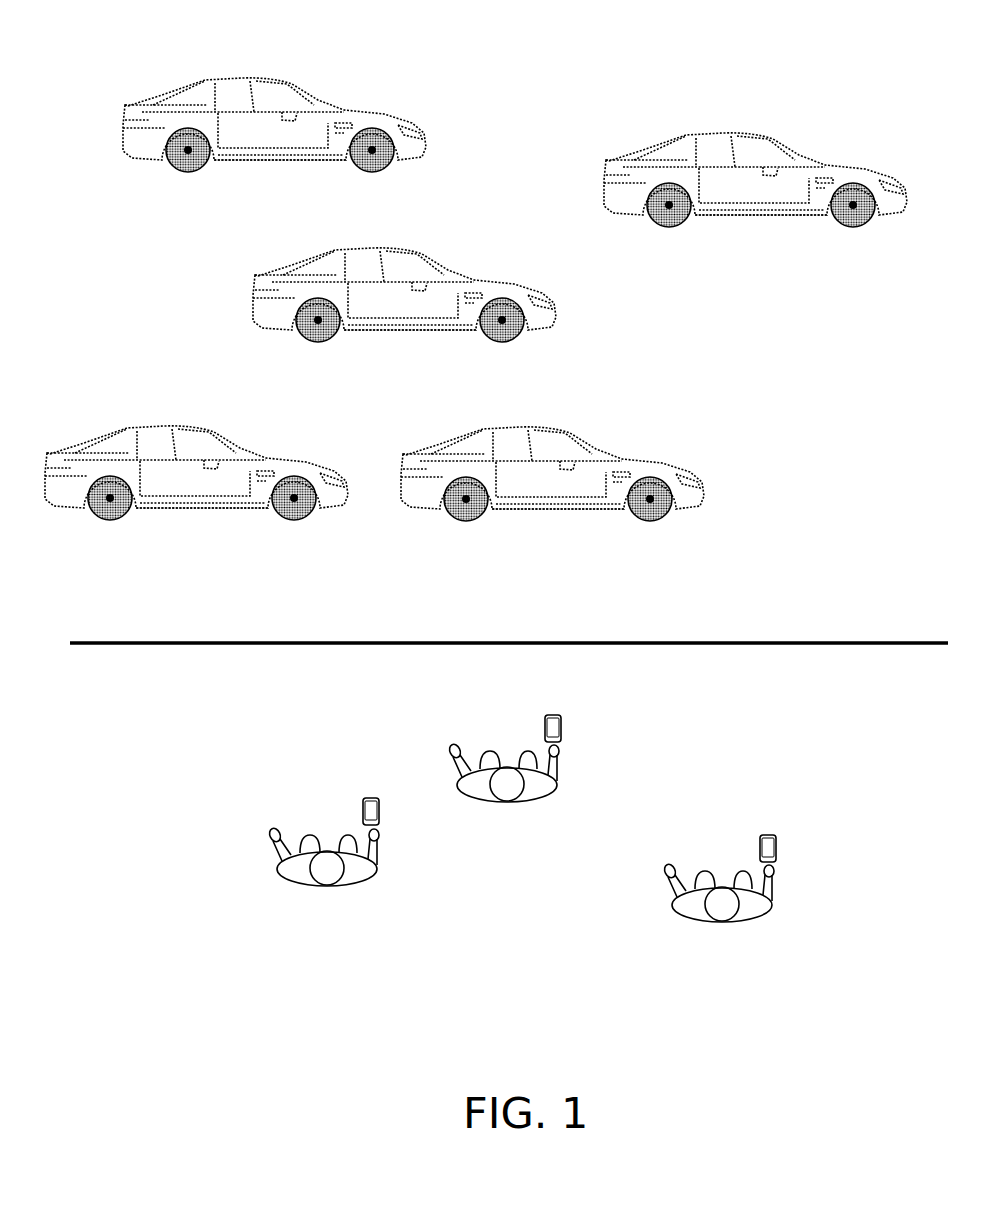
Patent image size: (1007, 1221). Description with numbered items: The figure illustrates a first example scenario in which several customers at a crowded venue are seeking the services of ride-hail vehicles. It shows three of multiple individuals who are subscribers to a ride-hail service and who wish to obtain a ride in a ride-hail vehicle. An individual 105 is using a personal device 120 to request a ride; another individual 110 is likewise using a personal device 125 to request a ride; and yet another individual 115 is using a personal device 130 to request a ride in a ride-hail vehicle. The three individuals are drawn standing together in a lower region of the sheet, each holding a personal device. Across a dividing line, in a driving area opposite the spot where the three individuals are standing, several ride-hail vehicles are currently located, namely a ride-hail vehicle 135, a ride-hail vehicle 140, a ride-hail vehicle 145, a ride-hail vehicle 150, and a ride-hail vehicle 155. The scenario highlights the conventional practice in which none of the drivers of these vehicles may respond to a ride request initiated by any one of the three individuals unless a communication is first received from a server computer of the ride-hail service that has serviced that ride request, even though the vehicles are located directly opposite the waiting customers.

The individual 105 is at (451, 722).
The individual 110 is at (267, 806).
The individual 115 is at (672, 848).
The personal device 120 is at (562, 731).
The personal device 125 is at (381, 814).
The personal device 130 is at (777, 852).
The ride-hail vehicle 135 is at (73, 420).
The ride-hail vehicle 140 is at (290, 258).
The ride-hail vehicle 145 is at (618, 443).
The ride-hail vehicle 150 is at (158, 70).
The ride-hail vehicle 155 is at (664, 121).